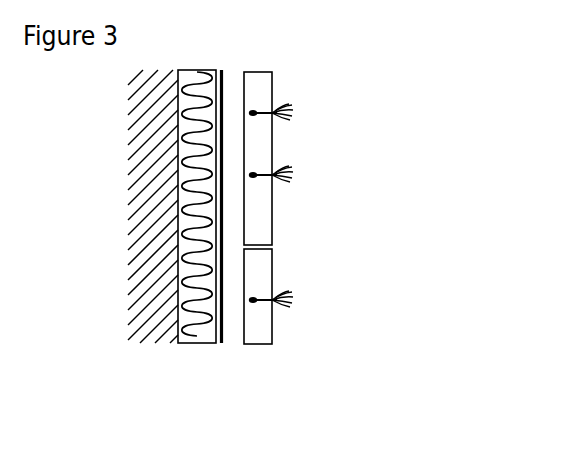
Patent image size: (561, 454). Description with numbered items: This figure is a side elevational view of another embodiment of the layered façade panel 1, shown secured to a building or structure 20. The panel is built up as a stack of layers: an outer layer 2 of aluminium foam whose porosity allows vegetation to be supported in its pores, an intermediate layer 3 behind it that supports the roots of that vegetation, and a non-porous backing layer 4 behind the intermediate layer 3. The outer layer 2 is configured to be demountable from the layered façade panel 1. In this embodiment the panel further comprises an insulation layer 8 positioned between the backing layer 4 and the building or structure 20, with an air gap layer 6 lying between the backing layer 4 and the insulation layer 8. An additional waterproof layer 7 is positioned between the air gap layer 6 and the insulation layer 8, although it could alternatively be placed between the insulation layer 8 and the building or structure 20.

The layered façade panel 1 is at (310, 210).
The outer layer 2 is at (293, 205).
The intermediate layer 3 is at (283, 314).
The non-porous backing layer 4 is at (272, 143).
The air gap layer 6 is at (250, 230).
The waterproof layer 7 is at (255, 257).
The insulation layer 8 is at (205, 232).
The building or structure 20 is at (169, 238).